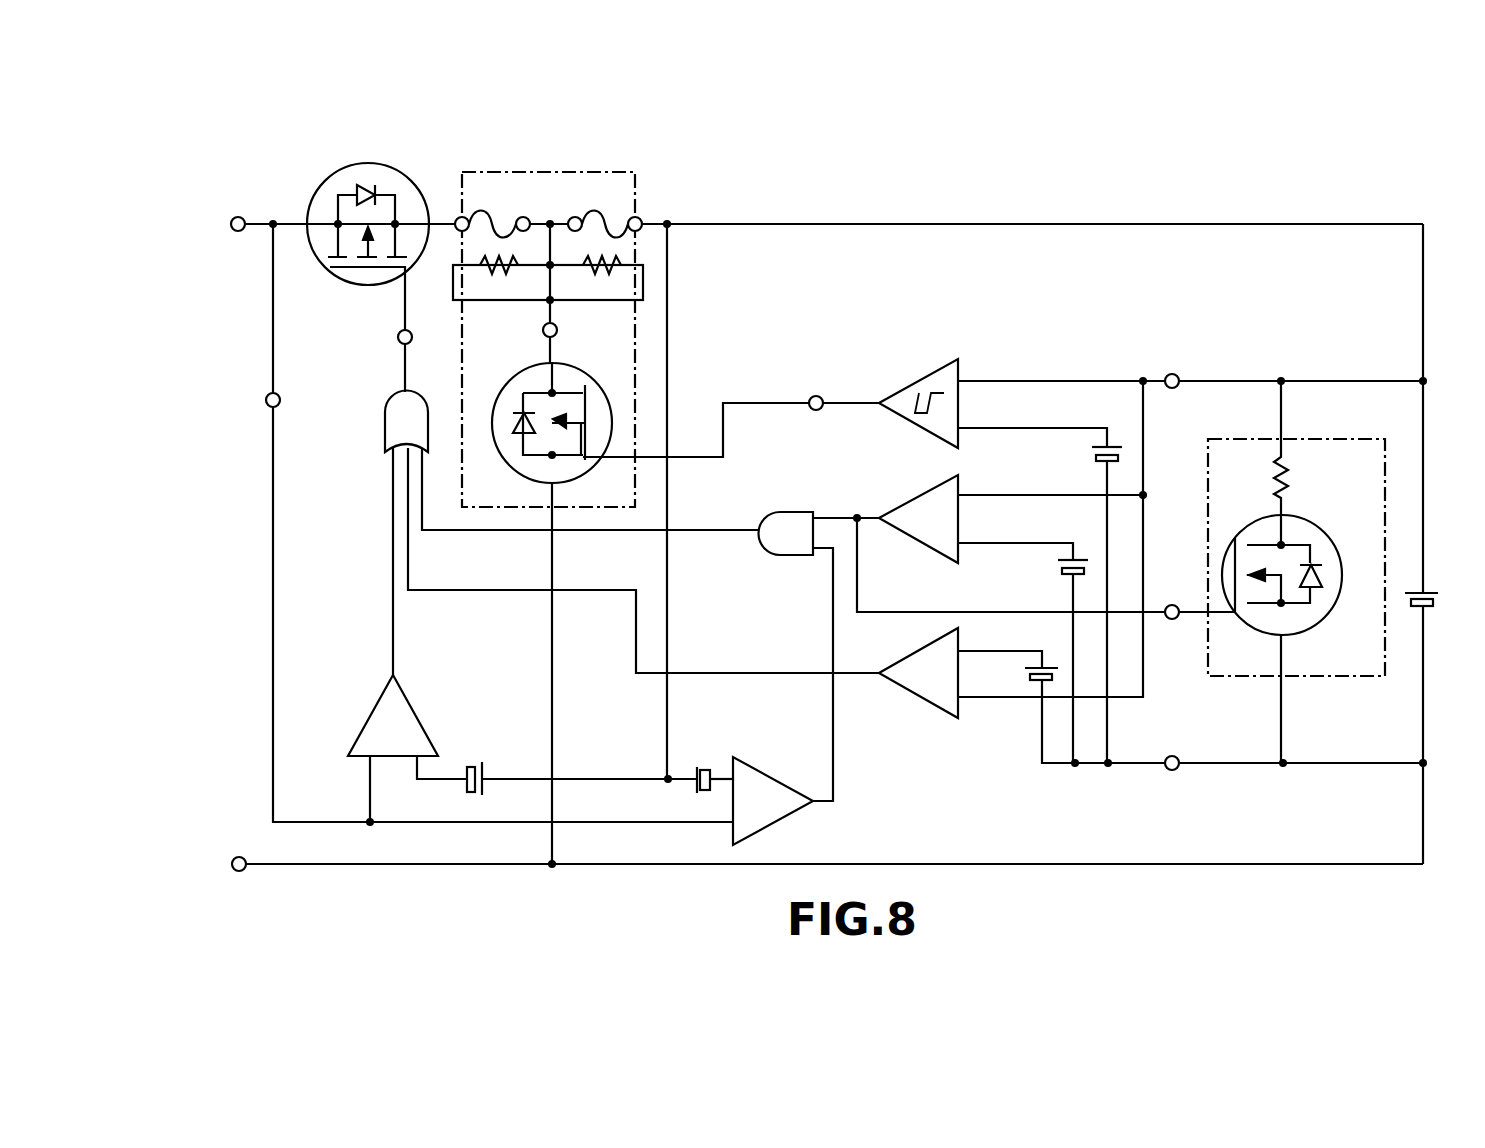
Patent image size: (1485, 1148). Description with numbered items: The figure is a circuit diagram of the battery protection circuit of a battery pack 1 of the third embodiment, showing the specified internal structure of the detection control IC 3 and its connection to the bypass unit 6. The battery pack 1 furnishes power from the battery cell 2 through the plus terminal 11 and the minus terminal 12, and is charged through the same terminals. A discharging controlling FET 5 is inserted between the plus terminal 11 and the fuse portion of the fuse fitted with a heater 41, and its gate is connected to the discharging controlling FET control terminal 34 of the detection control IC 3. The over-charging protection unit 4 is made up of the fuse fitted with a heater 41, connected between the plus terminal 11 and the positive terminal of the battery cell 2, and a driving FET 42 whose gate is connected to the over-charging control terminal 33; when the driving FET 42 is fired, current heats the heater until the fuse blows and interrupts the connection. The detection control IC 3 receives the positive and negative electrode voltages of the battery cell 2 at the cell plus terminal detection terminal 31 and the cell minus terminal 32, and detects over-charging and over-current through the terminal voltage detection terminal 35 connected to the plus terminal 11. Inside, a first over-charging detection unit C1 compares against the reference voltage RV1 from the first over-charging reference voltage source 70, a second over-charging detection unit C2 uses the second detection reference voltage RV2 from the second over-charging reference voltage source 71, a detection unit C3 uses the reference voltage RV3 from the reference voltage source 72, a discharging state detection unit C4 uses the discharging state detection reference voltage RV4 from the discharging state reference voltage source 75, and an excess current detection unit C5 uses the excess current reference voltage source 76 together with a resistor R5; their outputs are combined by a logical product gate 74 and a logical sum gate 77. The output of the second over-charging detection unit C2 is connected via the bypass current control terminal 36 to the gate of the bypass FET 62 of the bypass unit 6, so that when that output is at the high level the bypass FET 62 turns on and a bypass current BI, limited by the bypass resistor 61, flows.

The battery pack 1 is at (727, 214).
The battery cell 2 is at (1431, 591).
The detection control IC 3 is at (757, 455).
The over-charging protection unit 4 is at (586, 170).
The discharging controlling FET 5 is at (390, 165).
The bypass unit 6 is at (1324, 679).
The plus terminal 11 is at (238, 217).
The minus terminal 12 is at (238, 857).
The cell plus terminal detection terminal 31 is at (1172, 390).
The cell minus terminal 32 is at (1172, 771).
The over-charging control terminal 33 is at (816, 396).
The discharging controlling FET control terminal 34 is at (398, 337).
The terminal voltage detection terminal 35 is at (266, 399).
The bypass current control terminal 36 is at (1172, 620).
The fuse fitted with a heater 41 is at (503, 216).
The driving FET 42 is at (580, 372).
The bypass resistor 61 is at (1293, 466).
The bypass FET 62 is at (1331, 537).
The first over-charging reference voltage source 70 is at (1110, 445).
The second over-charging reference voltage source 71 is at (1077, 558).
The over-charging reference voltage source 72 is at (1035, 684).
The AND gate 74 is at (790, 550).
The discharging state reference voltage source 75 is at (690, 790).
The excess current reference voltage source 76 is at (475, 762).
The OR gate 77 is at (393, 427).
The bypass current BI is at (1285, 660).
The first over-charging detection unit C1 is at (905, 430).
The second over-charging detection unit C2 is at (906, 545).
The over-charging detection unit C3 is at (910, 690).
The discharging state detection unit C4 is at (785, 815).
The excess current detection unit C5 is at (416, 710).
The resistor R5 is at (445, 782).
The reference voltage RV1 is at (1053, 427).
The second detection reference voltage RV2 is at (993, 542).
The over-discharging detection reference voltage RV3 is at (995, 650).
The discharging state detection reference voltage RV4 is at (722, 766).